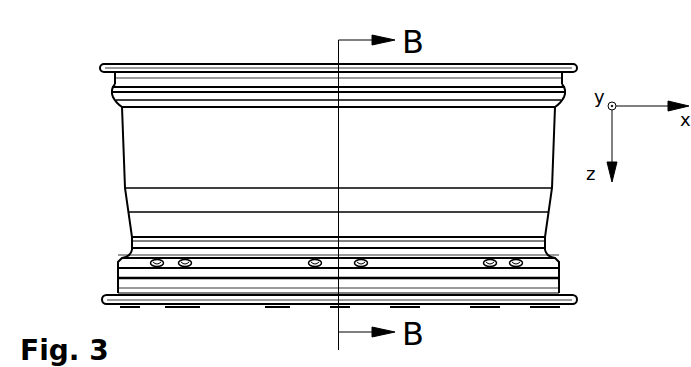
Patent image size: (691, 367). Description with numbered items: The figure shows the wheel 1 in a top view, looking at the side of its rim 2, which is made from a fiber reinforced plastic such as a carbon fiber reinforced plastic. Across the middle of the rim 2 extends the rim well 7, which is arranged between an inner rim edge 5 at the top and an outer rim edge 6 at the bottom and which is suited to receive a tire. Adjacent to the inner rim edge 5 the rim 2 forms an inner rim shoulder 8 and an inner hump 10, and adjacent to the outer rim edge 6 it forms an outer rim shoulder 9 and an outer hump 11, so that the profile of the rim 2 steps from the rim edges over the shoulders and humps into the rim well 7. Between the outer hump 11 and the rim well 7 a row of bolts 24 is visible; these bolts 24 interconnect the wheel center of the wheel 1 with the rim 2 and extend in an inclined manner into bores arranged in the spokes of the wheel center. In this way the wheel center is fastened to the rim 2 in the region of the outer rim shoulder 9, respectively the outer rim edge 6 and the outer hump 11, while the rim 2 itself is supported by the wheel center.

The wheel 1 is at (342, 235).
The rim 2 is at (274, 69).
The inner rim edge 5 is at (303, 42).
The outer rim edge 6 is at (303, 297).
The rim well 7 is at (338, 99).
The inner rim shoulder 8 is at (297, 87).
The outer rim shoulder 9 is at (294, 262).
The inner hump 10 is at (292, 121).
The outer hump 11 is at (291, 235).
The bolts 24 is at (337, 312).